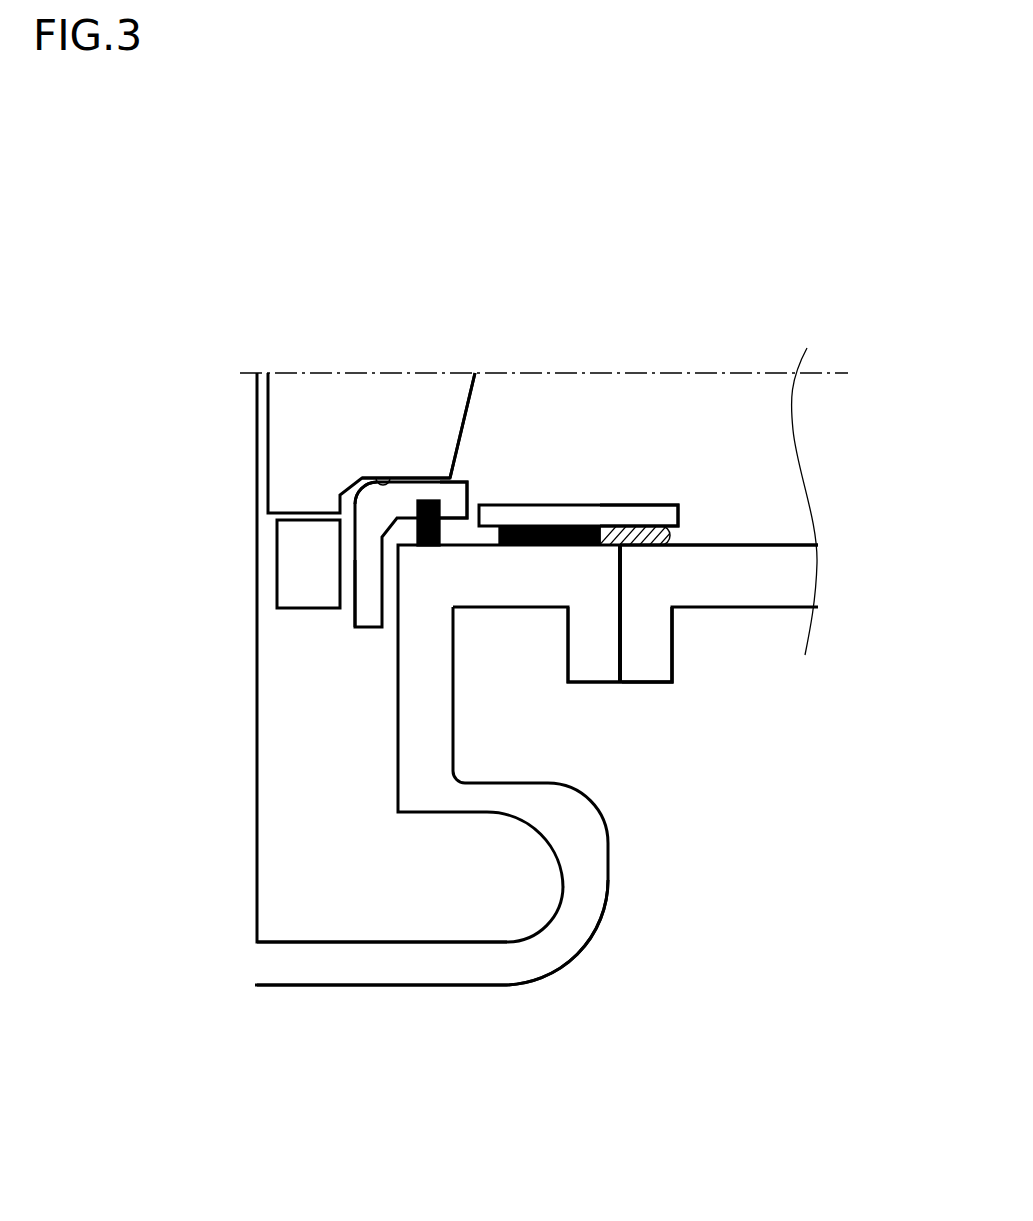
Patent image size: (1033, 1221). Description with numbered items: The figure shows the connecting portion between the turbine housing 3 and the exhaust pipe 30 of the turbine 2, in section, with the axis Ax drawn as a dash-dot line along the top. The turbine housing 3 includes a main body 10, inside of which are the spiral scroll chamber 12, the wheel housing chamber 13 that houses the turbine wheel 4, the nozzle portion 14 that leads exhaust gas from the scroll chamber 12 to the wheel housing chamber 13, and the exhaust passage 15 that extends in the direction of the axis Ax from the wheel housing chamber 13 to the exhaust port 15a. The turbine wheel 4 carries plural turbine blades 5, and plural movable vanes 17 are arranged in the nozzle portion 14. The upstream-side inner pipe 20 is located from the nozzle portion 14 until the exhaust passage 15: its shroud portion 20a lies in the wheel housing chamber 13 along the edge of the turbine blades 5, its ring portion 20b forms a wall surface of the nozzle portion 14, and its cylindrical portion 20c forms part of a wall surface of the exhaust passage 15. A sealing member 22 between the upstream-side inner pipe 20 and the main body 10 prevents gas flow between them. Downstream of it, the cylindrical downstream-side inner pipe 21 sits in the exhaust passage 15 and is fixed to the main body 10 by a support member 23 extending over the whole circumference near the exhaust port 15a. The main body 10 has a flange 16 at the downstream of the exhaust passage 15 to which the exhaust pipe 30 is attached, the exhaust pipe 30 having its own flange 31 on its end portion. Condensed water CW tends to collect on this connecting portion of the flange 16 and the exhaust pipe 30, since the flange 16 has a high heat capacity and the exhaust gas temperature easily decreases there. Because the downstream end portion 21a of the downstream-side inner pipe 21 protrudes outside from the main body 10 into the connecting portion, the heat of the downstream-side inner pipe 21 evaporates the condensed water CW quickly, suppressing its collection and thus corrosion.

The turbine 2 is at (295, 247).
The turbine housing 3 is at (538, 995).
The turbine wheel 4 is at (373, 385).
The turbine blades 5 is at (397, 477).
The main body 10 is at (583, 828).
The scroll chamber 12 is at (418, 888).
The wheel housing chamber 13 is at (300, 413).
The nozzle portion 14 is at (308, 737).
The exhaust passage 15 is at (505, 413).
The exhaust port 15a is at (612, 420).
The flange 16 is at (590, 682).
The movable vanes 17 is at (305, 568).
The upstream-side inner pipe 20 is at (378, 607).
The shroud portion 20a is at (373, 502).
The ring portion 20b is at (360, 582).
The cylindrical portion 20c is at (430, 488).
The downstream-side inner pipe 21 is at (560, 505).
The downstream end portion 21a is at (665, 505).
The sealing member 22 is at (435, 547).
The support member 23 is at (550, 547).
The exhaust pipe 30 is at (772, 607).
The flange 31 is at (650, 673).
The axis Ax is at (685, 373).
The condensed water CW is at (677, 537).